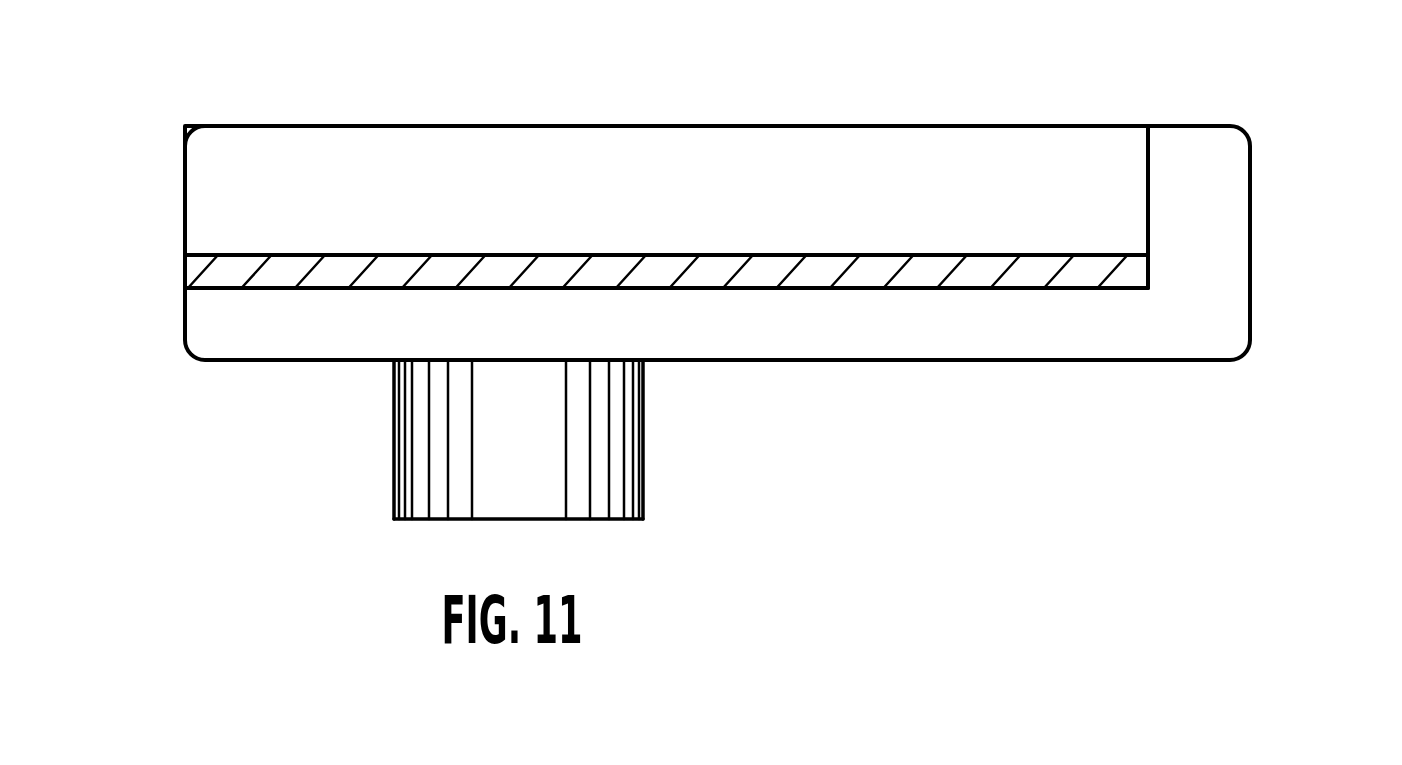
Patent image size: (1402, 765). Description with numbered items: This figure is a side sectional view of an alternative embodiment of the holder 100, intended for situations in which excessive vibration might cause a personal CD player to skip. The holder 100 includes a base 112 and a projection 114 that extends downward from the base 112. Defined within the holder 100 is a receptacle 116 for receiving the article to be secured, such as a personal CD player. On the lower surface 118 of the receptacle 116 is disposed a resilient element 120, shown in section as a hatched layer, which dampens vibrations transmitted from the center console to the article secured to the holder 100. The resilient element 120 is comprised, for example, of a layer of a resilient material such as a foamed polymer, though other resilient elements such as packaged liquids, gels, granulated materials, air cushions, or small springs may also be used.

The holder 100 is at (1266, 154).
The base 112 is at (1177, 318).
The projection 114 is at (617, 472).
The receptacle 116 is at (706, 213).
The lower surface 118 is at (320, 292).
The resilient element 120 is at (223, 274).